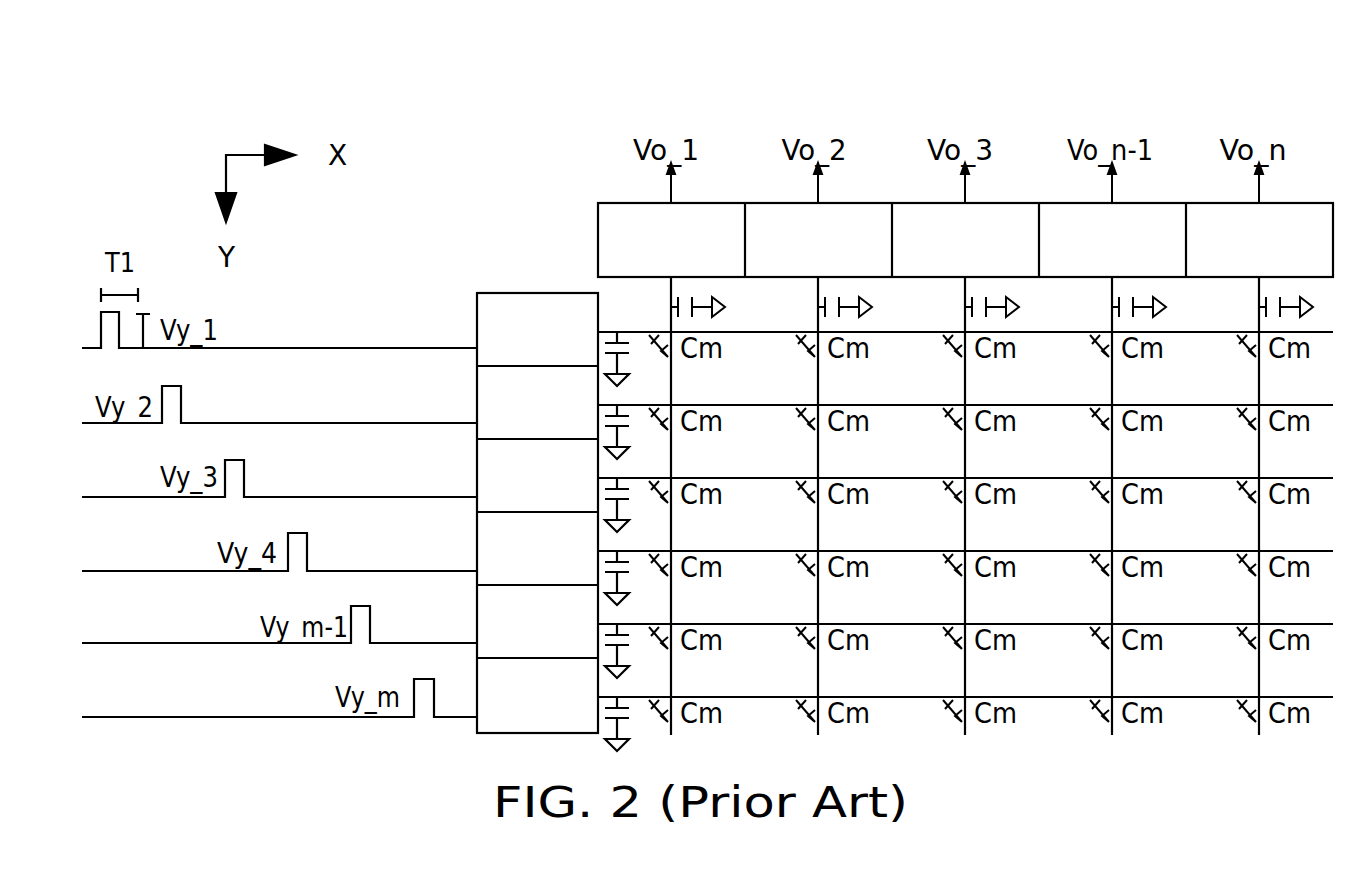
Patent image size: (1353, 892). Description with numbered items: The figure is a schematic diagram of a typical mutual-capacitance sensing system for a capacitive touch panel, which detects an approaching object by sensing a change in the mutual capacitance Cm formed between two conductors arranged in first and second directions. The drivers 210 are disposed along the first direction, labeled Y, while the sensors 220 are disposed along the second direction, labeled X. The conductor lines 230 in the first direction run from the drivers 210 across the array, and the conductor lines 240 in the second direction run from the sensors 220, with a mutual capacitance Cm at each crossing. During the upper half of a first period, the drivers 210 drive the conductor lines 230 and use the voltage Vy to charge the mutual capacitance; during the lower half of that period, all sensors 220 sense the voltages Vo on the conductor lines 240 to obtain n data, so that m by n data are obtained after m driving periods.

The driver 210 is at (477, 325).
The sensor 220 is at (622, 205).
The conductor line in the first direction 230 is at (640, 332).
The conductor line in the second direction 240 is at (672, 390).